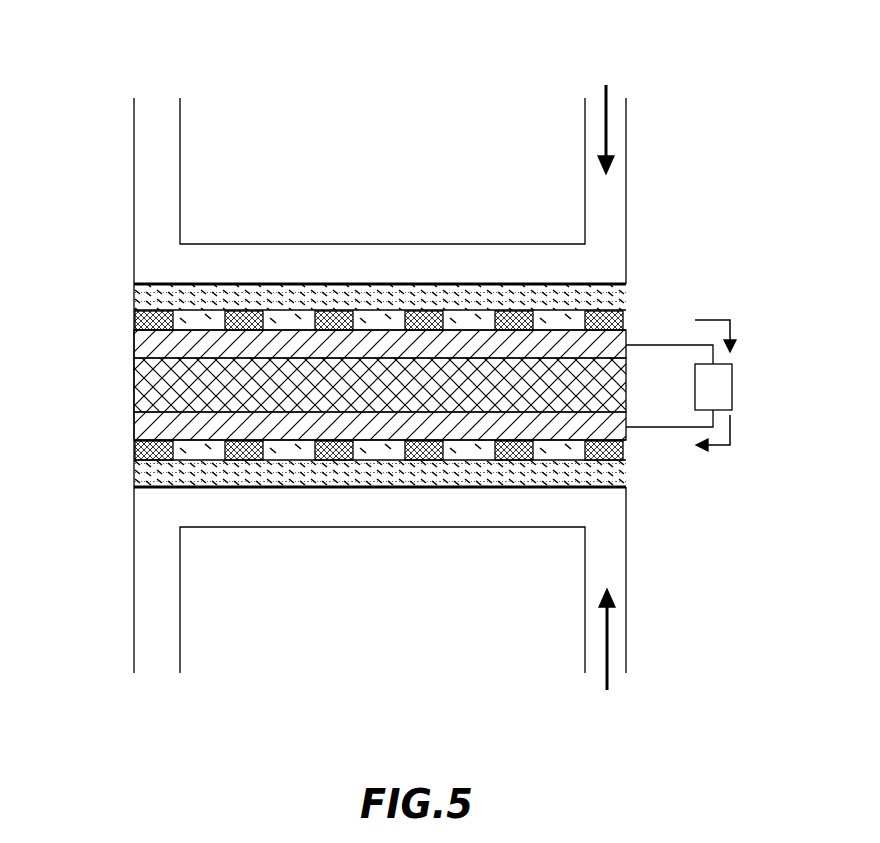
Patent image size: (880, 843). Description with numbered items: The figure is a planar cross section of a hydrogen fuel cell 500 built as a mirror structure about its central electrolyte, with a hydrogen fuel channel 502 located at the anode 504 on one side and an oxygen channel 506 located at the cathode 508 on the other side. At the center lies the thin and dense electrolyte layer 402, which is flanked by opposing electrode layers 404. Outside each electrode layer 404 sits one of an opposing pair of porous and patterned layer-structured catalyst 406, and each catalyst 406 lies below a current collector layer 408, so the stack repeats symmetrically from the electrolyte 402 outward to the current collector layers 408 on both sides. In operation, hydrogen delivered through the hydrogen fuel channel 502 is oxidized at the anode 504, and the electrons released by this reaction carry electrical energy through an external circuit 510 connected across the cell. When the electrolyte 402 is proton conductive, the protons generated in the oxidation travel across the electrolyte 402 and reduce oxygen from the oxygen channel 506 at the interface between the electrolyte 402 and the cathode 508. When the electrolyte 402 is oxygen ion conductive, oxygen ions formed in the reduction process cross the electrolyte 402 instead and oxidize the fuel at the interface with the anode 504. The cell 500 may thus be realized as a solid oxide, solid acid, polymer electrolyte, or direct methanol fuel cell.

The hydrogen fuel cell 500 is at (105, 77).
The hydrogen fuel channel 502 is at (627, 98).
The anode 504 is at (333, 283).
The oxygen channel 506 is at (626, 673).
The cathode 508 is at (405, 487).
The external circuit 510 is at (735, 380).
The electrolyte layer 402 is at (136, 390).
The electrode layers 404 is at (136, 345).
The porous and patterned layer-structured catalyst 406 is at (158, 312).
The current collector layers 408 is at (180, 288).